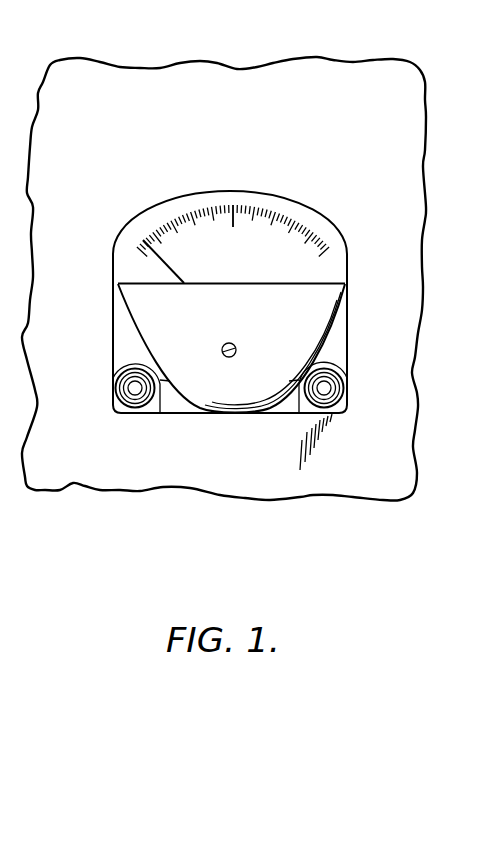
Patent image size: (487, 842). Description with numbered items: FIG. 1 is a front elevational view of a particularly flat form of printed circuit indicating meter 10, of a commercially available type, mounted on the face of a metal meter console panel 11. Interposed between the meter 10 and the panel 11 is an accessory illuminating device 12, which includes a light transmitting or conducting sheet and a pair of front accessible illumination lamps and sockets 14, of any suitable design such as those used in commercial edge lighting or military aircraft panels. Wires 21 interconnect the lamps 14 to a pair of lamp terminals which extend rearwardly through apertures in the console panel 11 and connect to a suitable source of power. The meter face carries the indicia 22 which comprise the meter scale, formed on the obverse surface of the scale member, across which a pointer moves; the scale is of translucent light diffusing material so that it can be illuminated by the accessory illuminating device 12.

The printed circuit indicating meter 10 is at (147, 339).
The meter console panel 11 is at (414, 152).
The accessory illuminating device 12 is at (355, 331).
The illumination lamps and sockets 14 is at (117, 387).
The wires 21 is at (165, 398).
The indicia 22 is at (240, 207).